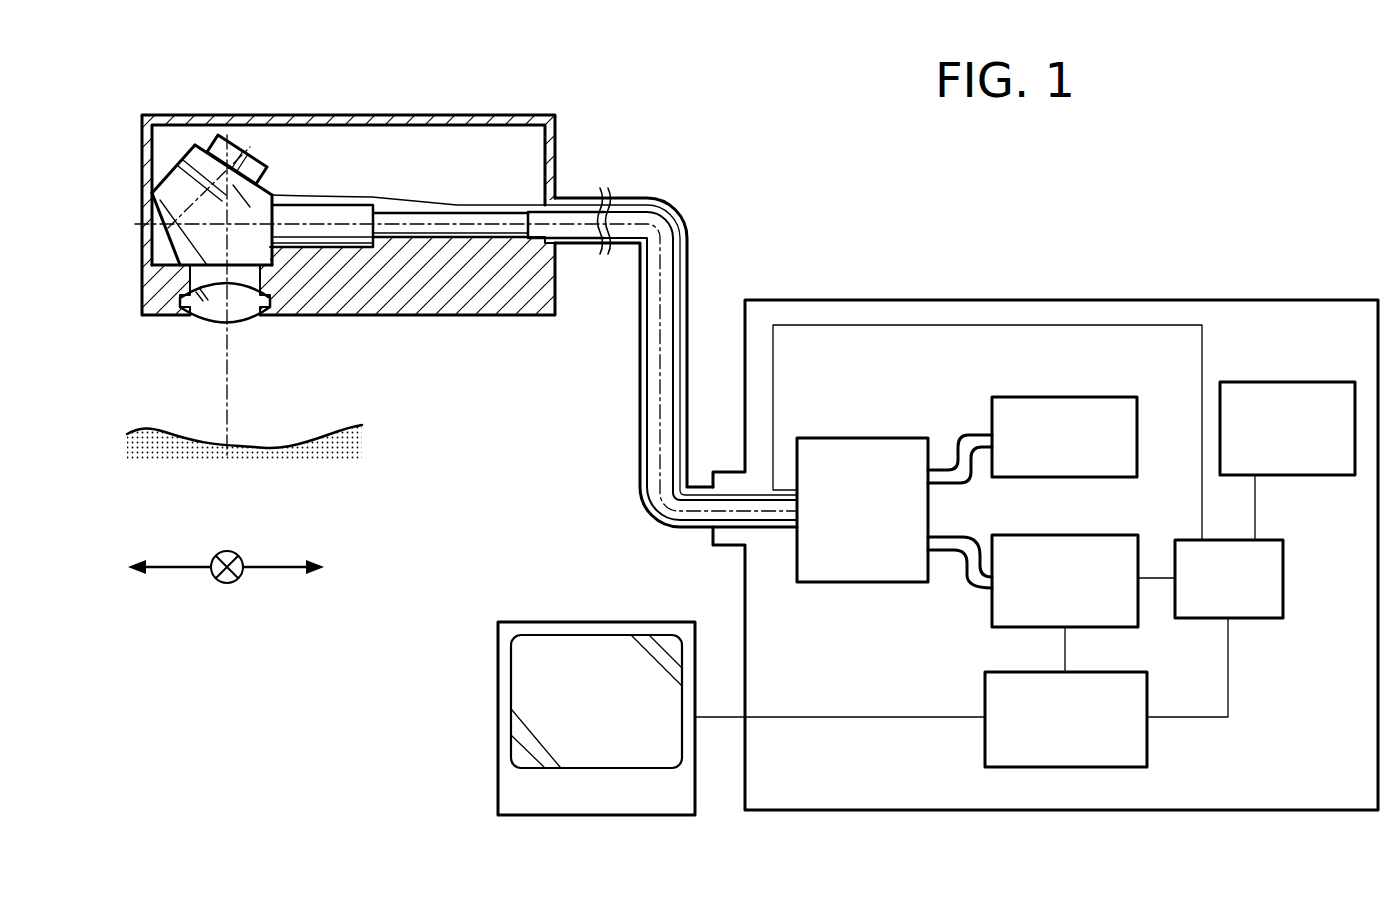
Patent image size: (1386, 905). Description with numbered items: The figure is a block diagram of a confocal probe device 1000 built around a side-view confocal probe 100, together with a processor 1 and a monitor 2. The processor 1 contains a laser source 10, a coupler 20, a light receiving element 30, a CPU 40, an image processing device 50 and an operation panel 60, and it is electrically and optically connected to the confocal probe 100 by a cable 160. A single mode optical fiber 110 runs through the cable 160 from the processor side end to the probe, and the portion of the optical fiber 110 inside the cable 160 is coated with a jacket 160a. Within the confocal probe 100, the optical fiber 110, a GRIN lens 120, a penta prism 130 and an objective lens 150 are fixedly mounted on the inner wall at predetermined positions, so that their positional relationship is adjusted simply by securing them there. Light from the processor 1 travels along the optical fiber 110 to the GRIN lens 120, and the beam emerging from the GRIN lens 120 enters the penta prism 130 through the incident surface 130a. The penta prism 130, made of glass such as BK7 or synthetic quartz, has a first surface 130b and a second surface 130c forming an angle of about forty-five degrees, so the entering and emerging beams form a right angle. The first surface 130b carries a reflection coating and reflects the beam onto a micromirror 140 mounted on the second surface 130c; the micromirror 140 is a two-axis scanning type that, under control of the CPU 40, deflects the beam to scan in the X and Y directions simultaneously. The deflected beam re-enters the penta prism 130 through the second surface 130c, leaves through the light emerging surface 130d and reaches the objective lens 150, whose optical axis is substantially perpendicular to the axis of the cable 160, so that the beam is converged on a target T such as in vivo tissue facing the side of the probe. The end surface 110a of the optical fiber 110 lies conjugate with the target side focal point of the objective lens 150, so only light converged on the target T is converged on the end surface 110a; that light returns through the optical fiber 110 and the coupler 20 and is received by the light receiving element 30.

The processor 1 is at (990, 300).
The monitor 2 is at (582, 622).
The laser source 10 is at (1094, 397).
The coupler 20 is at (892, 438).
The light receiving element 30 is at (1090, 535).
The CPU 40 is at (1283, 582).
The image processing device 50 is at (985, 698).
The operation panel 60 is at (1322, 382).
The confocal probe 100 is at (484, 114).
The optical fiber 110 is at (507, 240).
The end surface 110a is at (362, 207).
The GRIN lens 120 is at (366, 250).
The penta prism 130 is at (180, 183).
The incident surface 130a is at (271, 255).
The first surface 130b is at (162, 218).
The second surface 130c is at (205, 148).
The light emerging surface 130d is at (246, 268).
The micromirror 140 is at (240, 157).
The objective lens 150 is at (214, 315).
The cable 160 is at (642, 197).
The jacket 160a is at (643, 437).
The confocal probe device 1000 is at (323, 666).
The target T is at (145, 428).